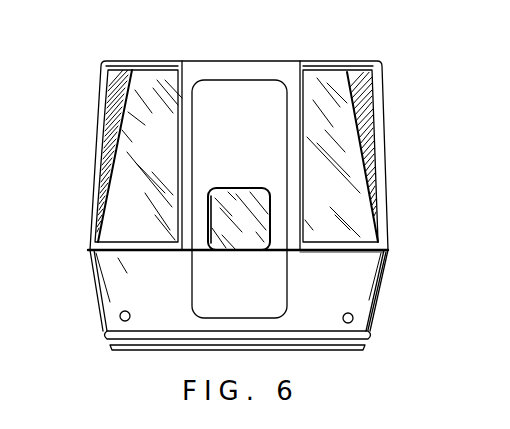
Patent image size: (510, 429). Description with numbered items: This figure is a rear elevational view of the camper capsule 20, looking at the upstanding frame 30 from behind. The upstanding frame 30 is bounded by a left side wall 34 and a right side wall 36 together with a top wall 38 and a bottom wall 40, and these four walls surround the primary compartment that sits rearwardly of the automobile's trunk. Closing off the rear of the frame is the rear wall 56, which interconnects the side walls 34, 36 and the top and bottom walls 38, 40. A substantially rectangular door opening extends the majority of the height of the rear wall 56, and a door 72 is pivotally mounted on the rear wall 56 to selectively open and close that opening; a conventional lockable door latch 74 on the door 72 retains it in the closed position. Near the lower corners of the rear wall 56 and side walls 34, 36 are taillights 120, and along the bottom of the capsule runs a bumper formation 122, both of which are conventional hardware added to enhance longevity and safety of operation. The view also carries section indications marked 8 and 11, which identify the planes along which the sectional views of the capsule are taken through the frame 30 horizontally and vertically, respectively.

The camper capsule 20 is at (396, 60).
The top wall 38 is at (317, 61).
The door 72 is at (250, 310).
The lockable door latch 74 is at (200, 218).
The side wall 34 is at (97, 293).
The side wall 36 is at (383, 280).
The upstanding frame 30 is at (380, 308).
The rear wall 56 is at (338, 309).
The bottom wall 40 is at (317, 353).
The taillights 120 is at (120, 317).
The bumper formations 122 is at (138, 335).
The section line 8- 8 is at (88, 244).
The section line 11- 11 is at (206, 61).